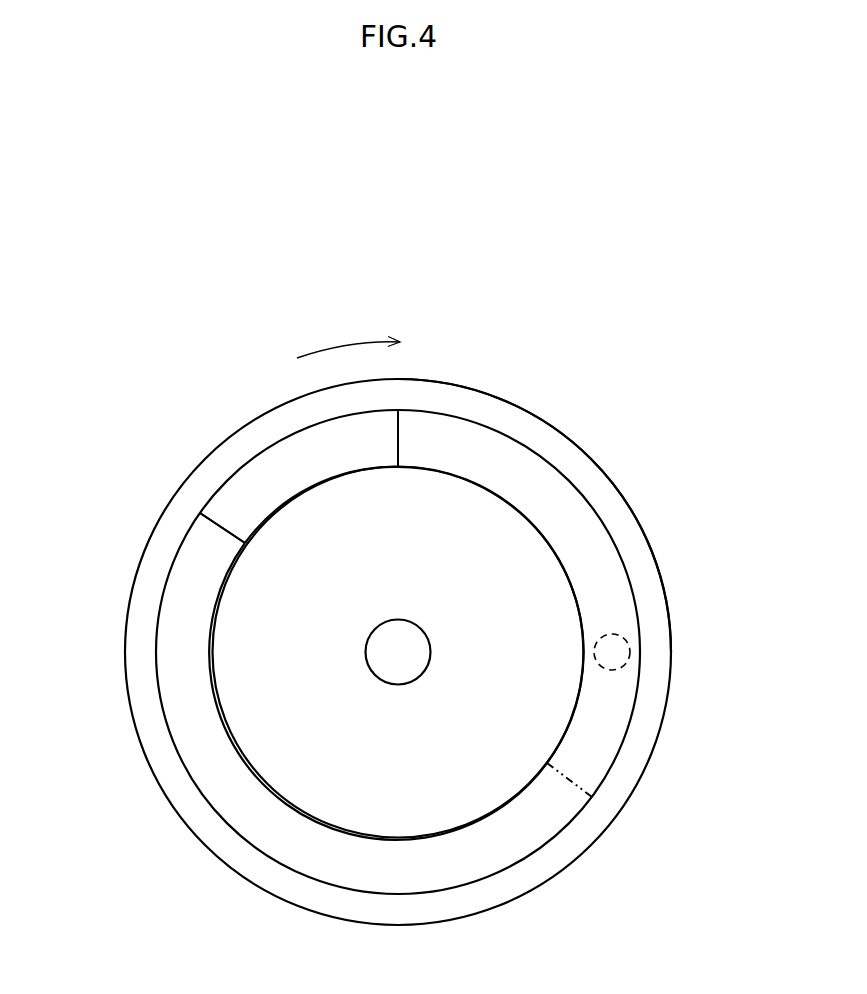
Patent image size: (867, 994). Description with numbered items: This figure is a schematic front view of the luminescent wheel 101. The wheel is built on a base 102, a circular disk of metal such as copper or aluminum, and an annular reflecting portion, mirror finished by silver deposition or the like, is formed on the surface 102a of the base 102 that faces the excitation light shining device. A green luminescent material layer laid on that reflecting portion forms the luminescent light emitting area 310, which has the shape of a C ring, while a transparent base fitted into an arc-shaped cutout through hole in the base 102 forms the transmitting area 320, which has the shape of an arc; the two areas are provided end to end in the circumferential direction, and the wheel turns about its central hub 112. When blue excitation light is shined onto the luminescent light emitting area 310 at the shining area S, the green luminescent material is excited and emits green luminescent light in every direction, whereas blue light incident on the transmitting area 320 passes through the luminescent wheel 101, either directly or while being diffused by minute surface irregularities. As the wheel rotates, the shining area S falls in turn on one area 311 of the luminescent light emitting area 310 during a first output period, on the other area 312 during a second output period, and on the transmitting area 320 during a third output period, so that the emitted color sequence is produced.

The luminescent wheel 101 is at (550, 363).
The base 102 is at (608, 502).
The surface 102a is at (628, 537).
The rotation shaft 112 is at (423, 629).
The luminescent light emitting area 310 is at (193, 705).
The one area 311 is at (220, 775).
The other area 312 is at (602, 705).
The transmitting area 320 is at (270, 480).
The shining area S is at (631, 647).